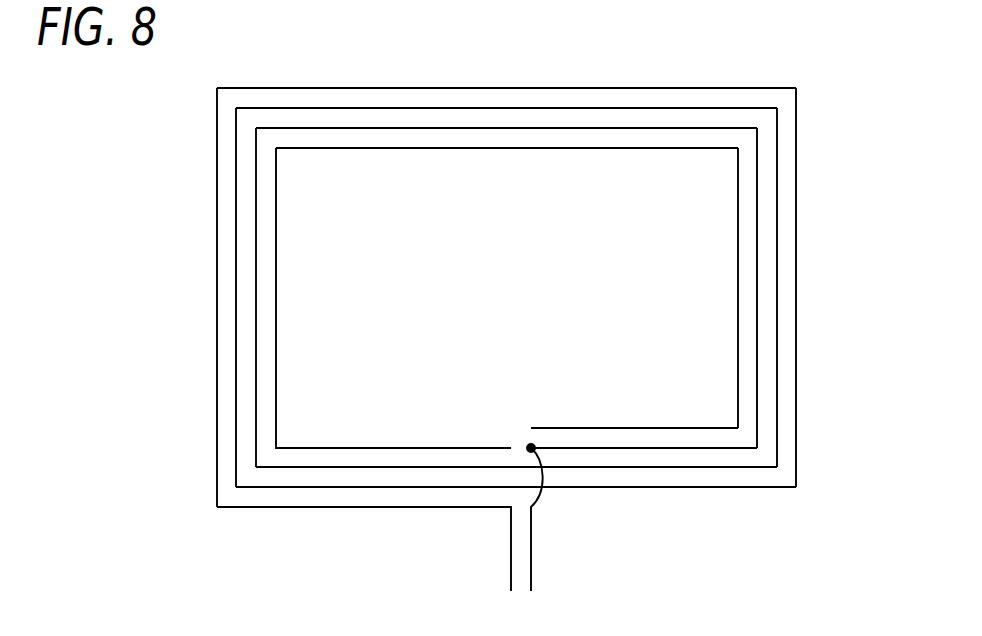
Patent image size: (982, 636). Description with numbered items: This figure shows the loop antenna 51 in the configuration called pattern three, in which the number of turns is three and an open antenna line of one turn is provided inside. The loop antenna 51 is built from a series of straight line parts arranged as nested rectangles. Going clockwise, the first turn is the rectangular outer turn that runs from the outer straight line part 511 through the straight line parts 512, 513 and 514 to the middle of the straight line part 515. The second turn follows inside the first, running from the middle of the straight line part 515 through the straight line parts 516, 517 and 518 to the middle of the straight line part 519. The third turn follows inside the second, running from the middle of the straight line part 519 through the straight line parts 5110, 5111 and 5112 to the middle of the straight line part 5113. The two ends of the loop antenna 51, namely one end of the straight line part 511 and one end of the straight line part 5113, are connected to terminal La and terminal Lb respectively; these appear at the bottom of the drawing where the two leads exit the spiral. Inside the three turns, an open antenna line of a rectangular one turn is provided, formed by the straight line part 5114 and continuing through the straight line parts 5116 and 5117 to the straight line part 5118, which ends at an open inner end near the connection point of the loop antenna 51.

The loop antenna 51 is at (826, 69).
The outer straight line part 511 is at (481, 507).
The straight line part 512 is at (217, 412).
The straight line part 513 is at (323, 88).
The straight line part 514 is at (797, 181).
The straight line part 515 is at (417, 488).
The straight line part 516 is at (236, 345).
The straight line part 517 is at (441, 108).
The straight line part 518 is at (777, 250).
The straight line part 519 is at (360, 469).
The straight line part 5110 is at (256, 277).
The straight line part 5111 is at (560, 128).
The straight line part 5112 is at (757, 316).
The straight line part 5113 is at (718, 448).
The straight line part 5114 is at (292, 533).
The straight line part 5116 is at (681, 148).
The straight line part 5117 is at (738, 386).
The straight line part 5118 is at (607, 428).